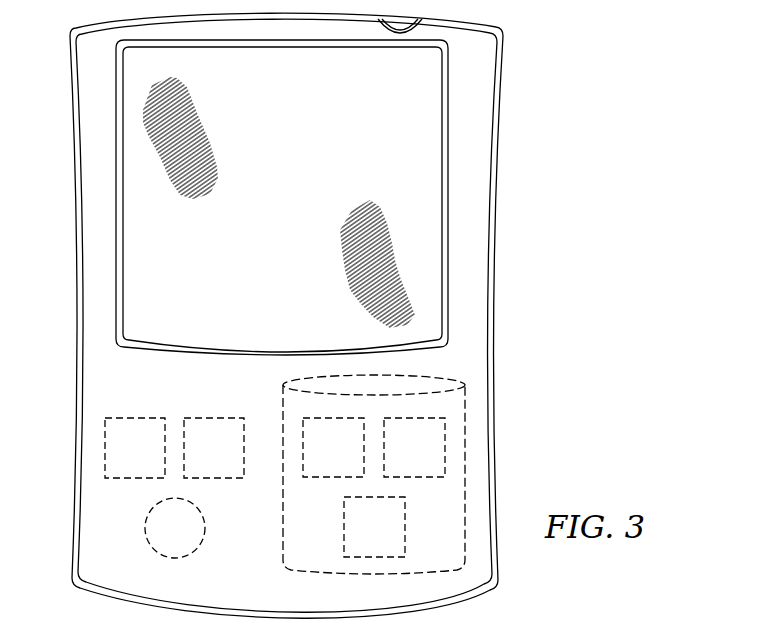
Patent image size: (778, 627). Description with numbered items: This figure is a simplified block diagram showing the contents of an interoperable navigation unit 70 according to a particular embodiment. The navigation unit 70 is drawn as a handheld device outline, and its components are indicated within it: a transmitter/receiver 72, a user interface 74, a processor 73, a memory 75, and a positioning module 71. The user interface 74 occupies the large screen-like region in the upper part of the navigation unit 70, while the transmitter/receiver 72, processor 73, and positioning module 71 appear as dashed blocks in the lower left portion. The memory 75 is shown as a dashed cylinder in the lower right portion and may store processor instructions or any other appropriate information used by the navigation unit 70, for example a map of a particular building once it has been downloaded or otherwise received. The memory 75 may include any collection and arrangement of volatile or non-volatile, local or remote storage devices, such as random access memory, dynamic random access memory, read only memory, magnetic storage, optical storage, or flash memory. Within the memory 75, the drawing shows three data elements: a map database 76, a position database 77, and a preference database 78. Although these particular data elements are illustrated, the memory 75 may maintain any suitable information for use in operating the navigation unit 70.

The navigation unit 70 is at (545, 136).
The positioning module 71 is at (204, 532).
The transmitter/receiver 72 is at (125, 478).
The processor 73 is at (227, 462).
The user interface 74 is at (293, 210).
The memory 75 is at (345, 474).
The map database 76 is at (347, 461).
The position database 77 is at (428, 461).
The preference database 78 is at (387, 541).